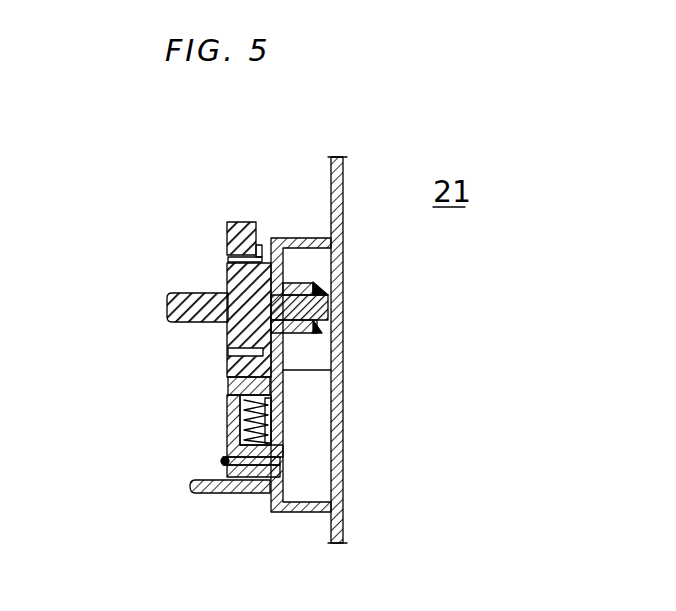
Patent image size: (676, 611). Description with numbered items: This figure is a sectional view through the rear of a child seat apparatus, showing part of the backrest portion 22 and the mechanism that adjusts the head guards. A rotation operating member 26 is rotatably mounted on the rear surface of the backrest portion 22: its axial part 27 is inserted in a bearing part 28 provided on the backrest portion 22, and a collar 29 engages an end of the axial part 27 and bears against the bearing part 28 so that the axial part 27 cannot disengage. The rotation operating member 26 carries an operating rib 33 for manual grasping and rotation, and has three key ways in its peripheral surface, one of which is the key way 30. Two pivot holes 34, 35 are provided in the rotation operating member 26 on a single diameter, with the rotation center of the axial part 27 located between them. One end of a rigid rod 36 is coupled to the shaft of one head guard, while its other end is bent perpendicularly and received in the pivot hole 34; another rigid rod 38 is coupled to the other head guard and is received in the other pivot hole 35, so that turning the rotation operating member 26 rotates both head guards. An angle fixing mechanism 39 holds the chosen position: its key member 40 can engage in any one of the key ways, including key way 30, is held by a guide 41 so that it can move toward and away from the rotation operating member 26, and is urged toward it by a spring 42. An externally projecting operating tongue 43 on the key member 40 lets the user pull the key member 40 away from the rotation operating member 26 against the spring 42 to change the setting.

The backrest portion 22 is at (329, 185).
The rotation operating member 26 is at (227, 225).
The axial part 27 is at (330, 307).
The bearing part 28 is at (300, 286).
The collar 29 is at (316, 328).
The key way 30 is at (228, 388).
The operating rib 33 is at (167, 302).
The pivot hole 34 is at (228, 353).
The pivot hole 35 is at (228, 259).
The rigid rod 36 is at (284, 363).
The rigid rod 38 is at (263, 255).
The angle fixing mechanism 39 is at (224, 428).
The key member 40 is at (283, 394).
The guide 41 is at (217, 438).
The spring 42 is at (283, 444).
The operating tongue 43 is at (207, 494).